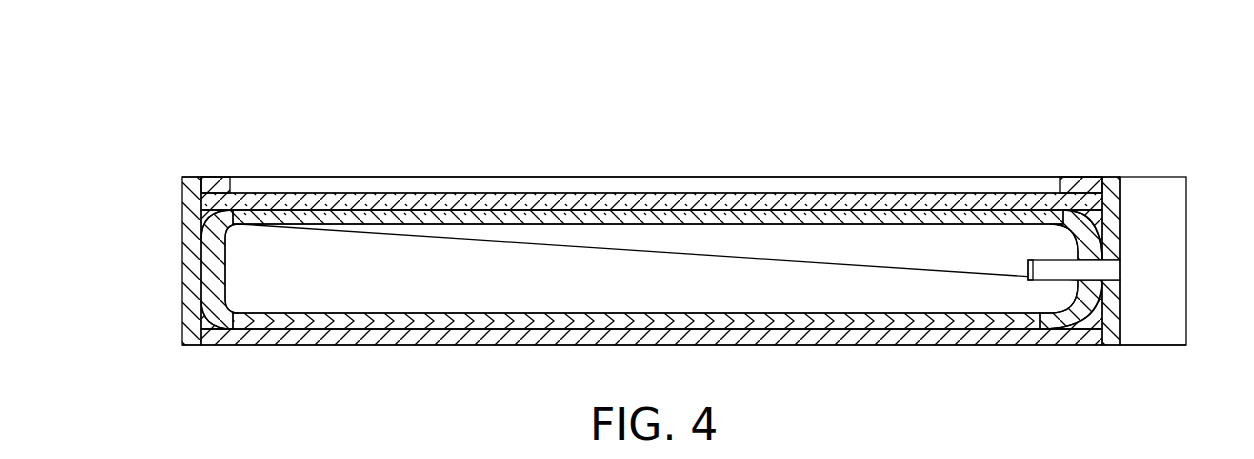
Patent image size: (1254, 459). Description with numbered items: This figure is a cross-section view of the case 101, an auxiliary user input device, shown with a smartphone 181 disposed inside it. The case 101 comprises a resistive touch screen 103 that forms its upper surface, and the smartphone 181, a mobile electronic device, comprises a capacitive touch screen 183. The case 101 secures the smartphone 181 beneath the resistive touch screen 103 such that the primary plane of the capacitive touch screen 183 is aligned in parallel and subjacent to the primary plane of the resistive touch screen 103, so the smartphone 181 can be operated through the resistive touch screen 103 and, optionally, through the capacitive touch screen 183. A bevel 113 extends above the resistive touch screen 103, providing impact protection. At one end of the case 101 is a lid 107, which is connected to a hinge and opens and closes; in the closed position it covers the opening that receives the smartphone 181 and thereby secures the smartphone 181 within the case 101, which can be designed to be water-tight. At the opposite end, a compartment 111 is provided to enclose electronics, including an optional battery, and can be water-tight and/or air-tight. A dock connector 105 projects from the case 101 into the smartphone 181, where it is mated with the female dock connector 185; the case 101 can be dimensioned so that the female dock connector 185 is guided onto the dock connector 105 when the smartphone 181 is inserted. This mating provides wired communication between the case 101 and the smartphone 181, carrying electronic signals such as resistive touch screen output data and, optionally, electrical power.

The case 101 is at (137, 128).
The resistive touch screen 103 is at (682, 198).
The dock connector 105 is at (1055, 268).
The lid 107 is at (193, 332).
The compartment 111 is at (1143, 210).
The bevel 113 is at (217, 187).
The smartphone 181 is at (342, 278).
The capacitive touch screen 183 is at (418, 213).
The female dock connector 185 is at (1028, 265).